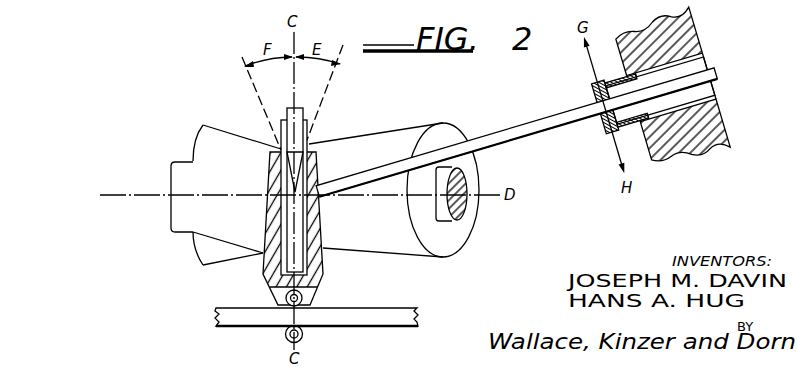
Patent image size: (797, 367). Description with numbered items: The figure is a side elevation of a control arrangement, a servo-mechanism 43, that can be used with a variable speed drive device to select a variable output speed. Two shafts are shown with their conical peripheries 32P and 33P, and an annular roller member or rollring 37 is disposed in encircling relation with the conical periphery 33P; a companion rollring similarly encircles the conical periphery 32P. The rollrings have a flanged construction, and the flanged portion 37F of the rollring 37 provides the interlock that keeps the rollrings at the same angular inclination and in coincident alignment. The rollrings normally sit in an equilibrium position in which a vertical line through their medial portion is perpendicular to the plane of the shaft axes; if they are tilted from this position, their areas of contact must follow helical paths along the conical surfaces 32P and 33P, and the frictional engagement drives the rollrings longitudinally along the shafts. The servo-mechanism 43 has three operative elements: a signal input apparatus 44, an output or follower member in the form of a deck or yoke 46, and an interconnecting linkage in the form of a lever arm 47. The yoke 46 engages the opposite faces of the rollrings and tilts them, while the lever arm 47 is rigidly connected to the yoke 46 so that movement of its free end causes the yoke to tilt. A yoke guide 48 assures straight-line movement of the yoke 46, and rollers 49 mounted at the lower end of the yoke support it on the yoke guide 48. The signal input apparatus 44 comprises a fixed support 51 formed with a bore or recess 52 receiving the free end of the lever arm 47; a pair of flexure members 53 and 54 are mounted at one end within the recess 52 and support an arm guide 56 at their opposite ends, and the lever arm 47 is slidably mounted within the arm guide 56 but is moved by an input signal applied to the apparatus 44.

The servo-mechanism 43 is at (168, 110).
The conical periphery of shaft 32P is at (225, 130).
The conical periphery of shaft 33P is at (419, 128).
The rollring 37 is at (308, 129).
The feed pipe 37F is at (302, 119).
The yoke 46 is at (324, 271).
The lever arm 47 is at (511, 128).
The yoke guide 48 is at (227, 316).
The rollers 49 is at (303, 300).
The signal input apparatus 44 is at (588, 83).
The arm guide 56 is at (590, 101).
The fixed support 51 is at (698, 37).
The bore or recess 52 is at (703, 63).
The flexure member 53 is at (617, 71).
The flexure member 54 is at (632, 133).